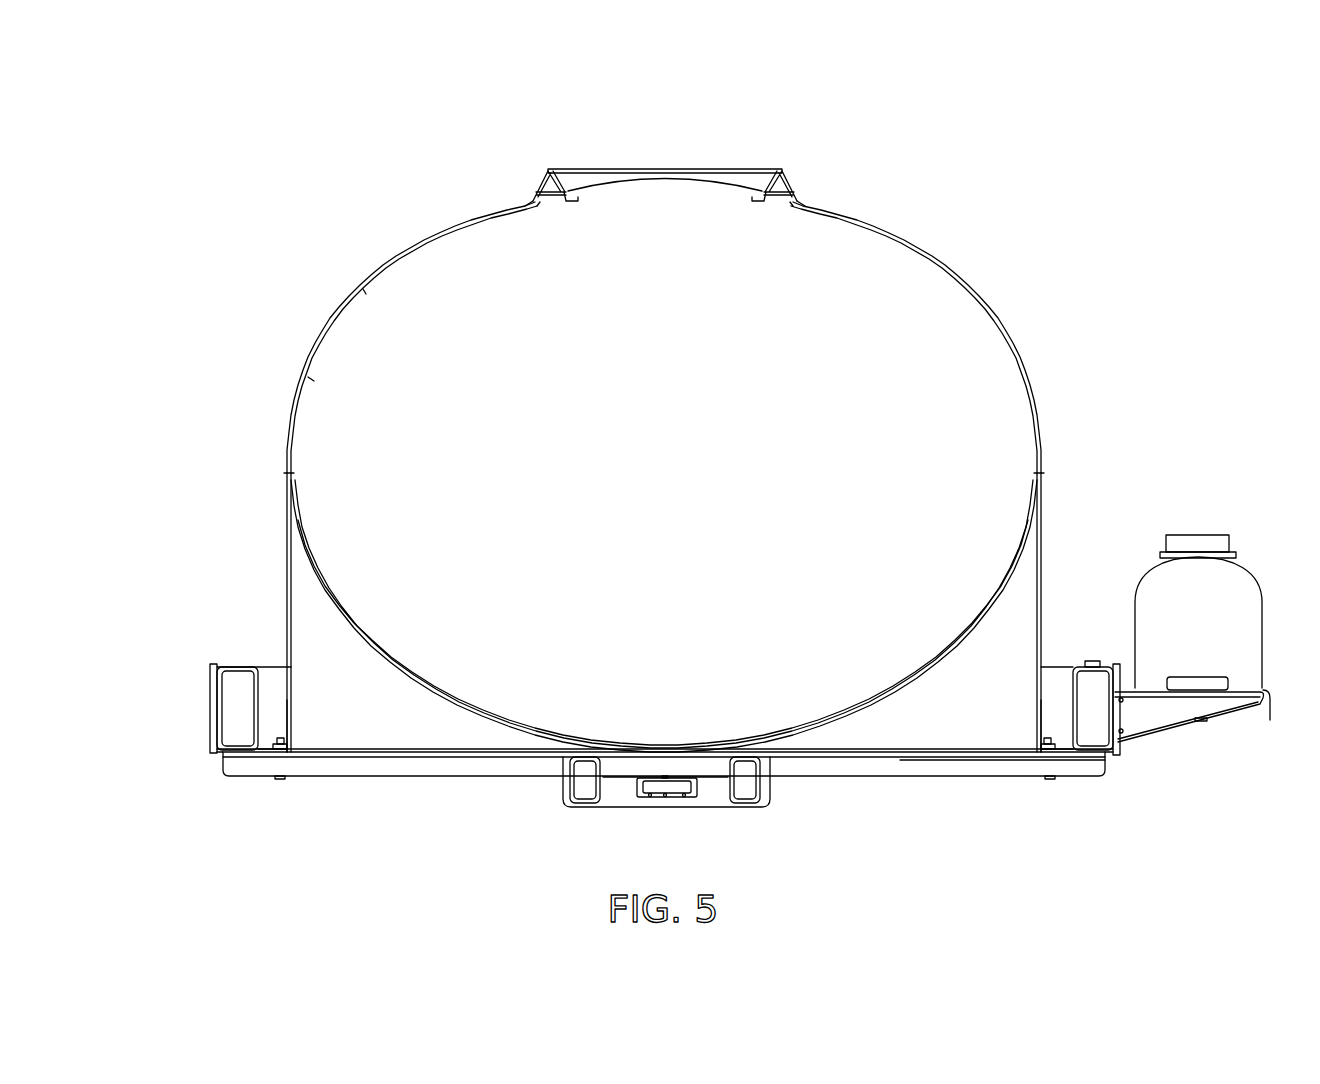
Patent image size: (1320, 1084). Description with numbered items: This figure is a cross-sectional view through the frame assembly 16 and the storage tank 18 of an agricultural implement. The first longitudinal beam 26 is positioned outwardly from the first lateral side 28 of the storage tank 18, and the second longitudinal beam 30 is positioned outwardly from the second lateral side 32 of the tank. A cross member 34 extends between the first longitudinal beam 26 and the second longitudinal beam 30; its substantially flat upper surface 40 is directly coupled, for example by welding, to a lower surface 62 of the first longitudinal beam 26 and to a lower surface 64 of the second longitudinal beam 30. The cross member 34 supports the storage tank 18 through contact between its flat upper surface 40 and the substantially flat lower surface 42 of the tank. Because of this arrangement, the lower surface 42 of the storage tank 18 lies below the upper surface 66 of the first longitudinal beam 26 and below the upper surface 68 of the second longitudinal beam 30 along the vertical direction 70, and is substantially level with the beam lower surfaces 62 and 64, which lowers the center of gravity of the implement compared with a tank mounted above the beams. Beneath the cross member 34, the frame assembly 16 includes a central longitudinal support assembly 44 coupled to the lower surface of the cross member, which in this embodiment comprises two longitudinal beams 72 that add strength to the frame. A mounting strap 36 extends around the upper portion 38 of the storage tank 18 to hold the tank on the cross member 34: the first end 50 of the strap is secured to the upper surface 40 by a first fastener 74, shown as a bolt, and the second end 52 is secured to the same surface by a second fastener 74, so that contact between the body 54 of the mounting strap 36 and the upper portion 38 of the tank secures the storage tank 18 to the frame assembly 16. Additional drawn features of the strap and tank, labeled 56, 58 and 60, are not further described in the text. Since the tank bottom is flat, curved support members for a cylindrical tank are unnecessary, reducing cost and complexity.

The frame assembly 16 is at (699, 732).
The storage tank 18 is at (668, 437).
The first longitudinal beam 26 is at (215, 690).
The first lateral side 28 is at (249, 488).
The second longitudinal beam 30 is at (1120, 690).
The second lateral side 32 is at (1072, 426).
The cross member 34 is at (502, 768).
The mounting strap 36 is at (365, 293).
The upper portion 38 is at (666, 146).
The upper surface 40 is at (925, 755).
The lower surface 42 is at (895, 750).
The central longitudinal support assembly 44 is at (685, 809).
The first end 50 is at (283, 742).
The second end 52 is at (1033, 760).
The body 54 is at (843, 218).
The band junction 56 is at (312, 379).
The band interior 58 is at (455, 300).
The lower band 60 is at (353, 658).
The lower surface 62 is at (228, 743).
The lower surface 64 is at (1093, 742).
The upper surface 66 is at (232, 667).
The upper surface 68 is at (1104, 665).
The vertical direction 70 is at (1193, 457).
The longitudinal beams 72 is at (585, 808).
The fastener 74 is at (280, 738).